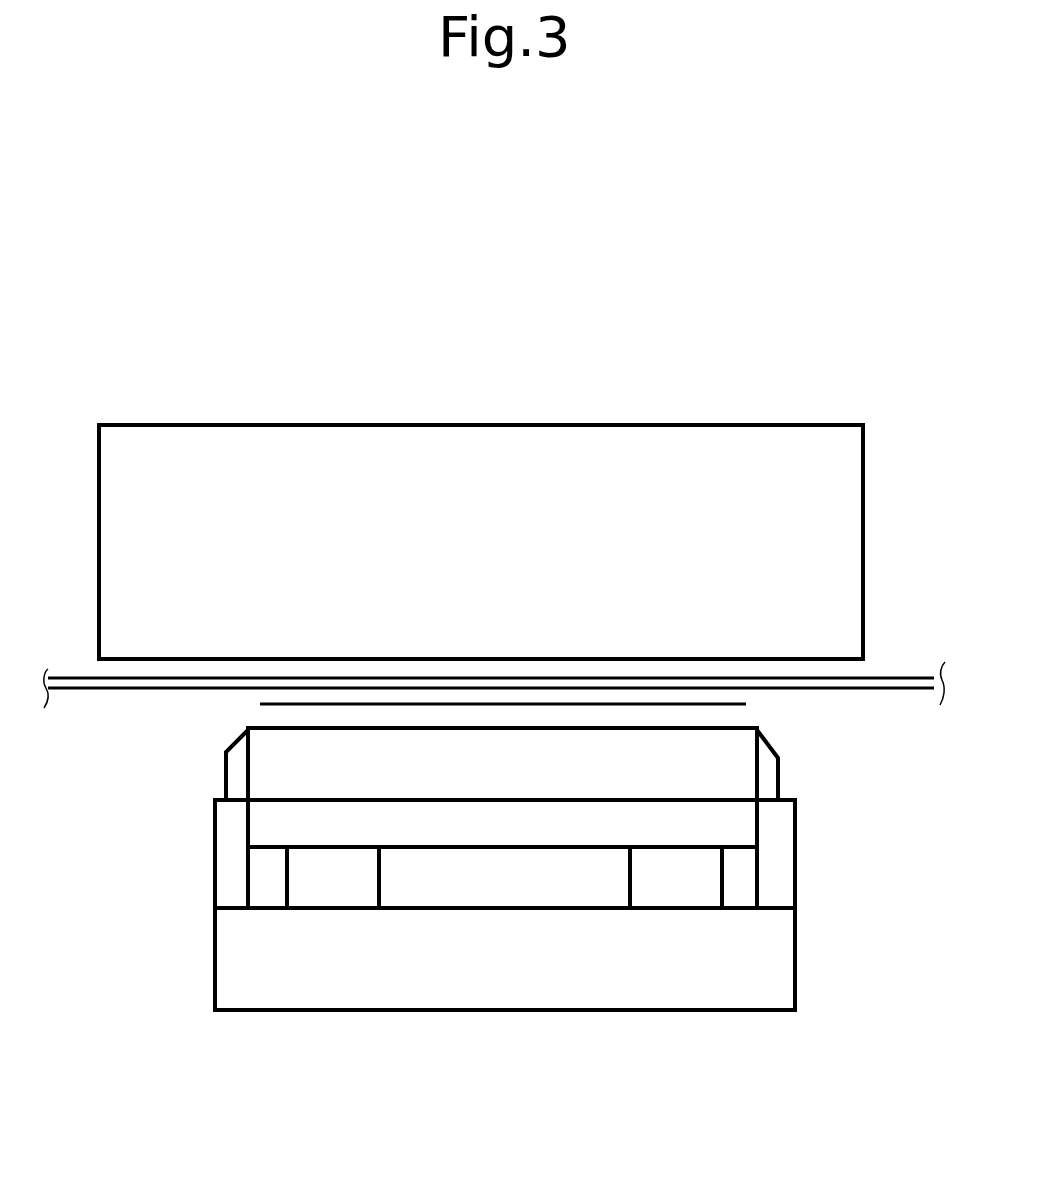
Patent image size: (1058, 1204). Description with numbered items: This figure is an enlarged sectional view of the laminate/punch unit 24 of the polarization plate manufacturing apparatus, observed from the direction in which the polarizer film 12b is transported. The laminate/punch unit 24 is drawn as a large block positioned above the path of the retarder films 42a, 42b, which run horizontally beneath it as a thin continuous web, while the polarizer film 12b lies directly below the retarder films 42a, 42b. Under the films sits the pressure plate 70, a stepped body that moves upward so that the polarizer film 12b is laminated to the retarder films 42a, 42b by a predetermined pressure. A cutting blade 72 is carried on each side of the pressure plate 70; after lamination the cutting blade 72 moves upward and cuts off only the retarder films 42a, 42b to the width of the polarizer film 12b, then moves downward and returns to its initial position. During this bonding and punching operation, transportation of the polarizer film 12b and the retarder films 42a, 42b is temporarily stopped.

The laminate/punch unit 24 is at (688, 382).
The retarder film 42a is at (851, 690).
The retarder film 42b is at (887, 676).
The polarizer film 12b is at (745, 705).
The pressure plate 70 is at (273, 837).
The cutting blade 72 is at (222, 771).